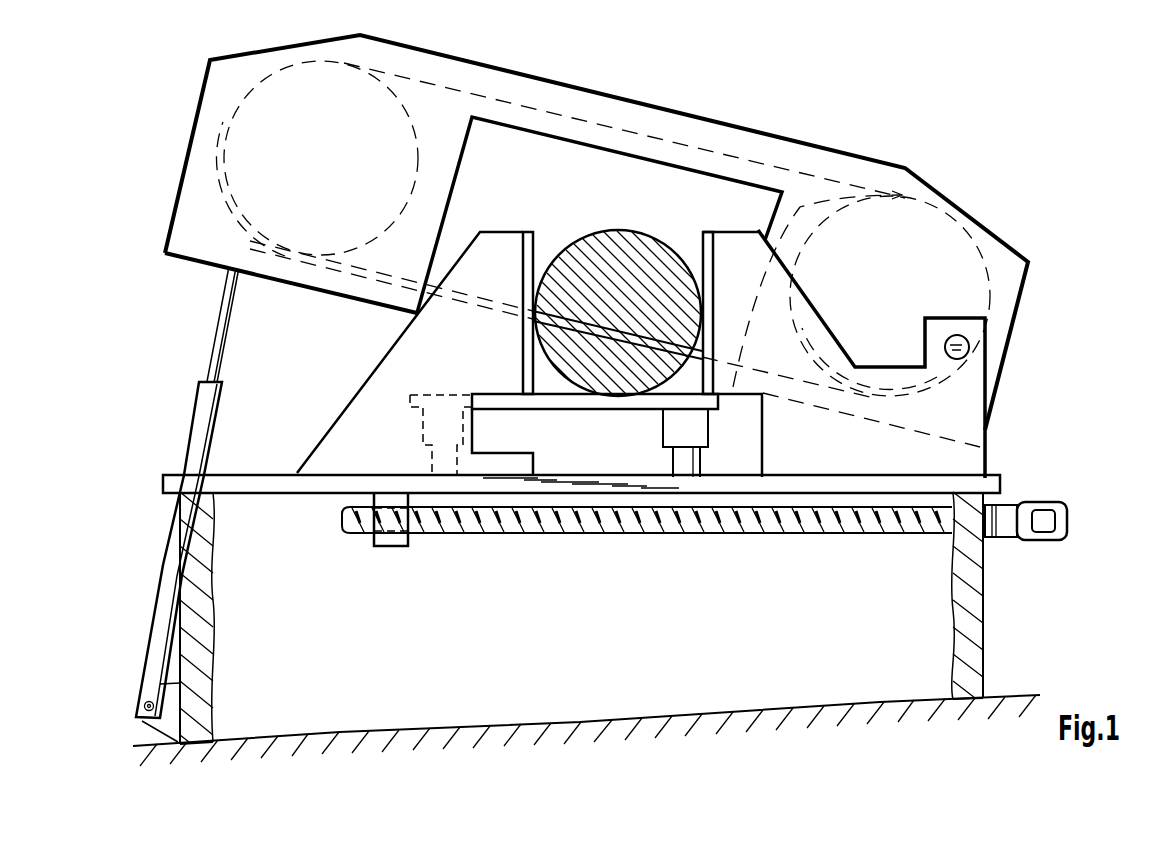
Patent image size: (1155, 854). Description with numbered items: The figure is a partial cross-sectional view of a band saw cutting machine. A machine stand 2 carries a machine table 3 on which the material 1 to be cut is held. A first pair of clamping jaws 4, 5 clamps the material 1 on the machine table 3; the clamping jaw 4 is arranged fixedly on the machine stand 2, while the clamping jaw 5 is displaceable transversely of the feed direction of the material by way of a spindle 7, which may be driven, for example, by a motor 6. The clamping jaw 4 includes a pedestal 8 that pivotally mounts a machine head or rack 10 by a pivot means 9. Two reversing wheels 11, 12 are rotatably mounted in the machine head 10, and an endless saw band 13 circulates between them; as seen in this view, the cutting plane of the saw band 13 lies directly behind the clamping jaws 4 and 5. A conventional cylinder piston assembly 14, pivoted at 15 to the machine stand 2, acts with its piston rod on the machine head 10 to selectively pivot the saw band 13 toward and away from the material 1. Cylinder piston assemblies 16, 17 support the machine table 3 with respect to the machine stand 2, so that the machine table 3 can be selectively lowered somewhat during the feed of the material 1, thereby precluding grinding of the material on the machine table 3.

The material 1 is at (610, 248).
The machine stand 2 is at (197, 562).
The machine table 3 is at (592, 402).
The clamping jaw 4 is at (733, 242).
The clamping jaw 5 is at (402, 358).
The motor 6 is at (1042, 522).
The spindle 7 is at (975, 538).
The pedestal 8 is at (950, 443).
The pivot means 9 is at (965, 345).
The machine head 10 is at (450, 70).
The reversing wheel 11 is at (907, 207).
The reversing wheel 12 is at (235, 112).
The saw band 13 is at (553, 313).
The cylinder piston assembly 14 is at (203, 412).
The pivot 15 is at (150, 700).
The cylinder piston assembly 16 is at (445, 460).
The cylinder piston assembly 17 is at (677, 462).